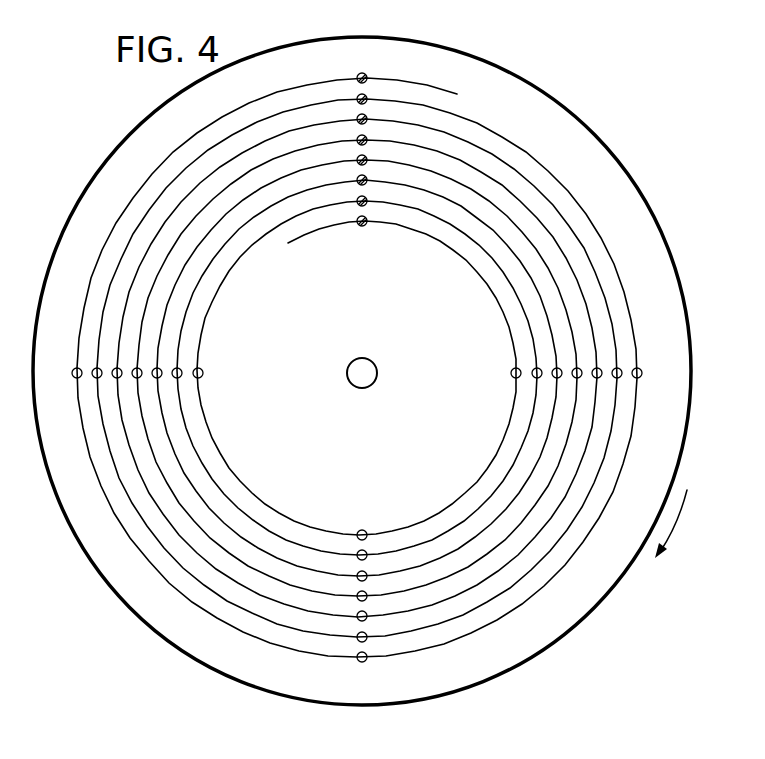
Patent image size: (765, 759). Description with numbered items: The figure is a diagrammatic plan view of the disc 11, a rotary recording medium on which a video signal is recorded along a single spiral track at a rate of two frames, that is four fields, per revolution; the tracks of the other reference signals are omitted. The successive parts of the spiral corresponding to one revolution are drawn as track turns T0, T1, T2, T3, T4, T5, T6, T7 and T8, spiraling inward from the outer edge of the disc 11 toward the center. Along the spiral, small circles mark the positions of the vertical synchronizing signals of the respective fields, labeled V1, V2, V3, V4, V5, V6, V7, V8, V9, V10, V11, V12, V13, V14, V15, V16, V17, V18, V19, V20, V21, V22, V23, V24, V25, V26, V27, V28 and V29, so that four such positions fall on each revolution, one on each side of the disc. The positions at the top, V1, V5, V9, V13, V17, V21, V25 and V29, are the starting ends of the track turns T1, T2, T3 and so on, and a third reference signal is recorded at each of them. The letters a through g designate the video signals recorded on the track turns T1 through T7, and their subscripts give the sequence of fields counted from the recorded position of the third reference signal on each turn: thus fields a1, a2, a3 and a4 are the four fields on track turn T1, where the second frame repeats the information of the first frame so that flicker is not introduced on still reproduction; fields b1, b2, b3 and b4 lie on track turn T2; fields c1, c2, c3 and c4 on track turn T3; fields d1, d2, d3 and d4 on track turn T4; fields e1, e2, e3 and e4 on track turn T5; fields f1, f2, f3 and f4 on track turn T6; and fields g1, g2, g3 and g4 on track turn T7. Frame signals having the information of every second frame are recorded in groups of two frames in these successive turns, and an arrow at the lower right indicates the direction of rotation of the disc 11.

The disc 11 is at (670, 250).
The track turn T0 is at (436, 92).
The track turn T1 is at (185, 142).
The track turn T2 is at (319, 102).
The track turn T3 is at (244, 152).
The track turn T4 is at (188, 205).
The track turn T5 is at (245, 203).
The track turn T6 is at (212, 262).
The track turn T7 is at (208, 315).
The track turn T8 is at (315, 230).
The vertical synchronizing signal position V1 is at (367, 79).
The vertical synchronizing signal position V2 is at (72, 373).
The vertical synchronizing signal position V3 is at (360, 653).
The vertical synchronizing signal position V4 is at (642, 373).
The vertical synchronizing signal position V5 is at (367, 99).
The vertical synchronizing signal position V6 is at (93, 377).
The vertical synchronizing signal position V7 is at (360, 633).
The vertical synchronizing signal position V8 is at (620, 377).
The vertical synchronizing signal position V9 is at (367, 119).
The vertical synchronizing signal position V10 is at (113, 369).
The vertical synchronizing signal position V11 is at (360, 612).
The vertical synchronizing signal position V12 is at (599, 368).
The vertical synchronizing signal position V13 is at (367, 140).
The vertical synchronizing signal position V14 is at (133, 377).
The vertical synchronizing signal position V15 is at (360, 592).
The vertical synchronizing signal position V16 is at (574, 369).
The vertical synchronizing signal position V17 is at (367, 160).
The vertical synchronizing signal position V18 is at (161, 370).
The vertical synchronizing signal position V19 is at (360, 572).
The vertical synchronizing signal position V20 is at (555, 378).
The vertical synchronizing signal position V21 is at (367, 180).
The vertical synchronizing signal position V22 is at (181, 377).
The vertical synchronizing signal position V23 is at (360, 551).
The vertical synchronizing signal position V24 is at (535, 377).
The vertical synchronizing signal position V25 is at (367, 201).
The vertical synchronizing signal position V26 is at (203, 373).
The vertical synchronizing signal position V27 is at (365, 530).
The vertical synchronizing signal position V28 is at (511, 373).
The vertical synchronizing signal position V29 is at (363, 227).
The video signal field a1 is at (111, 233).
The video signal field b1 is at (118, 262).
The video signal field c1 is at (134, 279).
The video signal field d1 is at (149, 292).
The video signal field e1 is at (203, 238).
The video signal field f1 is at (212, 264).
The video signal field g1 is at (212, 300).
The video signal field a2 is at (122, 522).
The video signal field b2 is at (143, 526).
The video signal field c2 is at (166, 522).
The video signal field d2 is at (191, 521).
The video signal field e2 is at (210, 503).
The video signal field f2 is at (238, 507).
The video signal field g2 is at (236, 482).
The video signal field a3 is at (600, 522).
The video signal field b3 is at (570, 530).
The video signal field c3 is at (540, 535).
The video signal field d3 is at (515, 535).
The video signal field e3 is at (516, 494).
The video signal field f3 is at (507, 477).
The video signal field g3 is at (487, 470).
The video signal field a4 is at (600, 236).
The video signal field b4 is at (583, 248).
The video signal field c4 is at (565, 262).
The video signal field d4 is at (548, 272).
The video signal field e4 is at (512, 270).
The video signal field f4 is at (515, 290).
The video signal field g4 is at (525, 305).